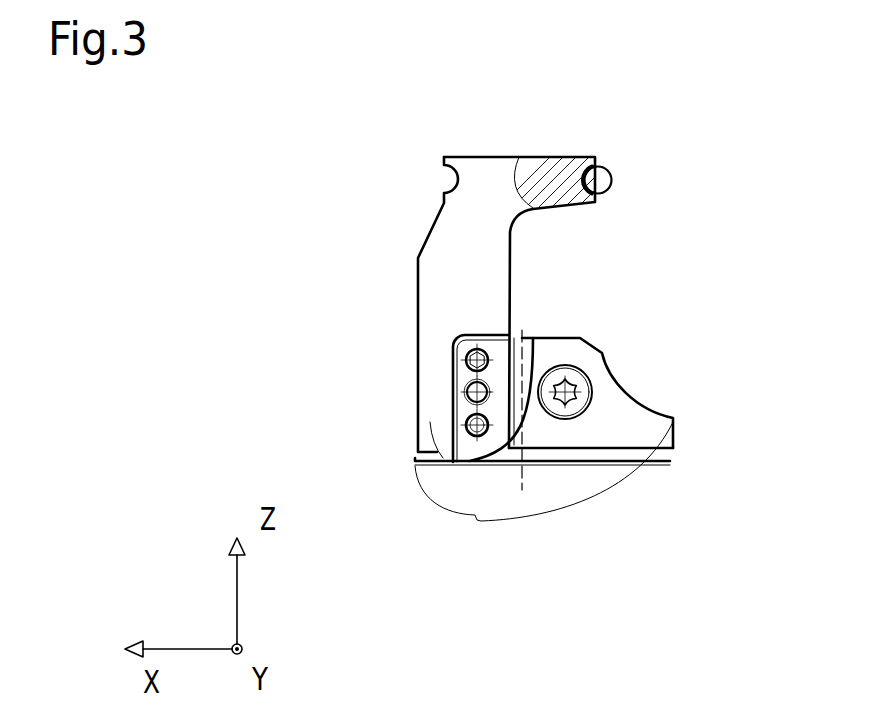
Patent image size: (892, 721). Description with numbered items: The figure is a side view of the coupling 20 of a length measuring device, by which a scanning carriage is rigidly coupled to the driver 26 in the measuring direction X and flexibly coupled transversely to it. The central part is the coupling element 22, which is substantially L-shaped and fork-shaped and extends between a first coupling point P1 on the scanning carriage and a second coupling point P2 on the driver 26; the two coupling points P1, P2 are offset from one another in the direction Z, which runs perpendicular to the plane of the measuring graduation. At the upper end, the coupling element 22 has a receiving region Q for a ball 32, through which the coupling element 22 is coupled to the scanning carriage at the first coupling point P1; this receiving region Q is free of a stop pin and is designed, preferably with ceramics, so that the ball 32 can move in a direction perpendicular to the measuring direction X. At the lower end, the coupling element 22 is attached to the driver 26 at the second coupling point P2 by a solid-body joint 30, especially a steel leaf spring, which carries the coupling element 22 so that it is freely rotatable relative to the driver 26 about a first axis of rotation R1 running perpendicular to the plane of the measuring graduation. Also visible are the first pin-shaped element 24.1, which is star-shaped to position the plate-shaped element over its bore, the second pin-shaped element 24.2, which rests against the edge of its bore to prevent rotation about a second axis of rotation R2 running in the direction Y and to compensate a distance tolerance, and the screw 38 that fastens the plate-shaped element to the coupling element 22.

The coupling 20 is at (489, 311).
The coupling element 22 is at (457, 237).
The receiving region Q is at (535, 178).
The first coupling point P1 is at (600, 158).
The ball 32 is at (603, 179).
The solid-body joint 30 is at (533, 337).
The driver 26 is at (610, 411).
The second pin-shaped element 24.2 is at (467, 357).
The screw 38 is at (467, 392).
The first pin-shaped element 24.1 is at (468, 423).
The second axis of rotation R2 is at (470, 460).
The first axis of rotation R1 is at (522, 482).
The second coupling point P2 is at (532, 423).